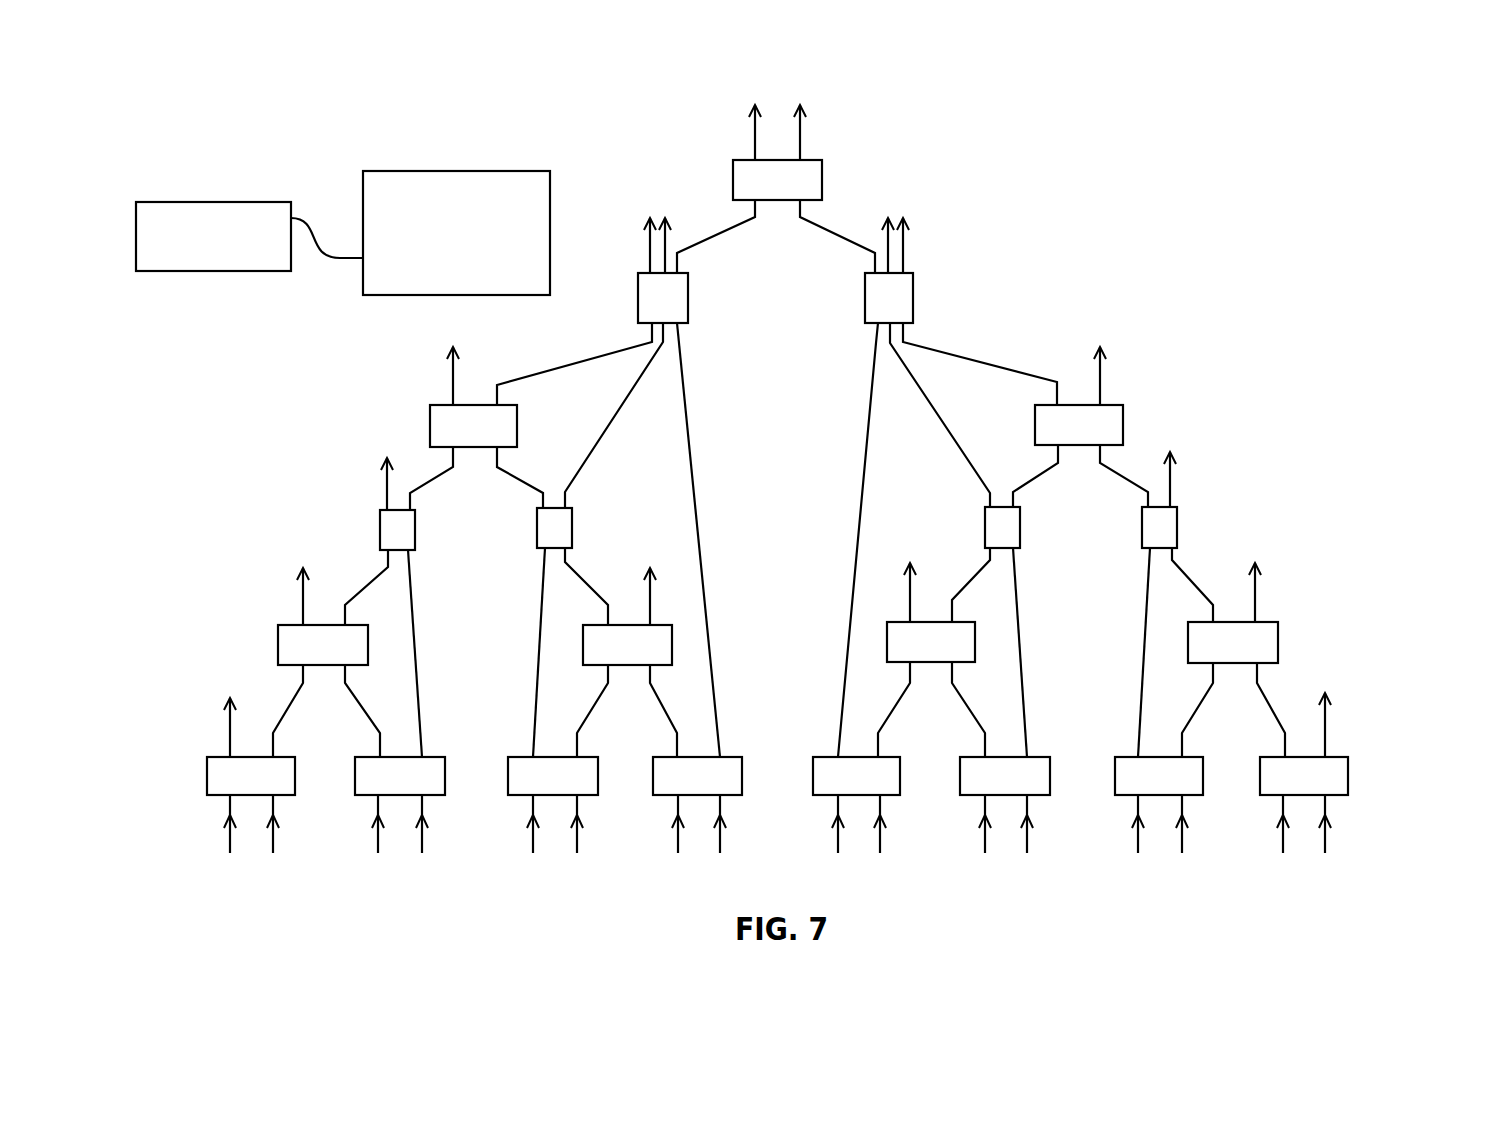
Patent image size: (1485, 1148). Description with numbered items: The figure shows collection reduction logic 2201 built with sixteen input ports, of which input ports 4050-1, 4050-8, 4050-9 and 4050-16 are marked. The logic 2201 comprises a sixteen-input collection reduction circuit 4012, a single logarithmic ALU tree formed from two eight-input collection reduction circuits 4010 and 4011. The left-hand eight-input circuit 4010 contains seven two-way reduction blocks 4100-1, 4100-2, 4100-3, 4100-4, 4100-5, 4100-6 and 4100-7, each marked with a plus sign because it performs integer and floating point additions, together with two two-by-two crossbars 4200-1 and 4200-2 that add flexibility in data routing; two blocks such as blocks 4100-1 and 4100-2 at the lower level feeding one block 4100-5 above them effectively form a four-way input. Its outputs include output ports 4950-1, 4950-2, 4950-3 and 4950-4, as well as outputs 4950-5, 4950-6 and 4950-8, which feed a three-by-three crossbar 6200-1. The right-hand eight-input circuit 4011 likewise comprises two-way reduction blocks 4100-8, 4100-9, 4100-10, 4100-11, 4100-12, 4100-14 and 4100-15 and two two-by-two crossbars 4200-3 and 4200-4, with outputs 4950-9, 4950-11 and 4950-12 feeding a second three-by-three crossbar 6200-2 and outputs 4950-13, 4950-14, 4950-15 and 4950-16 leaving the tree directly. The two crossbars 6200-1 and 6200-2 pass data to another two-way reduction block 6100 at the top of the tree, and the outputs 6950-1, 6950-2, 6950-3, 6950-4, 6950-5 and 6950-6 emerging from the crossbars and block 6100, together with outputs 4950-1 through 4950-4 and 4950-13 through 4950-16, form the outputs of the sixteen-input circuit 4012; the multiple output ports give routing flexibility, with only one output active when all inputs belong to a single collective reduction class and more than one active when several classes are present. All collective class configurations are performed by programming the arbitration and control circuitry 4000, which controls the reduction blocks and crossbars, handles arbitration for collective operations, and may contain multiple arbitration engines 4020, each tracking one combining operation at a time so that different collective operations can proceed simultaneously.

The collection reduction logic 2201 is at (330, 183).
The arbitration and control circuitry 4000 is at (508, 168).
The arbitration engine 4020 is at (249, 236).
The eight-input collective reduction circuit 4010 is at (343, 363).
The eight-input collection reduction circuit 4011 is at (1280, 407).
The sixteen-input collection reduction circuit 4012 is at (1062, 182).
The two-way reduction block 6100 is at (825, 182).
The 3×3 crossbar 6200-1 is at (688, 300).
The 3×3 crossbar 6200-2 is at (913, 292).
The output 6950-1 is at (648, 252).
The output 6950-2 is at (667, 252).
The output 6950-3 is at (757, 132).
The output 6950-4 is at (803, 132).
The output 6950-5 is at (898, 227).
The output 6950-6 is at (907, 247).
The two-way reduction block 4100-1 is at (217, 753).
The two-way reduction block 4100-2 is at (423, 757).
The two-way reduction block 4100-3 is at (568, 773).
The two-way reduction block 4100-4 is at (730, 753).
The two-way reduction block 4100-5 is at (287, 637).
The two-way reduction block 4100-6 is at (625, 637).
The two-way reduction block 4100-7 is at (445, 423).
The two-way reduction block 4100-8 is at (835, 780).
The two-way reduction block 4100-9 is at (1028, 753).
The two-way reduction block 4100-10 is at (1185, 782).
The two-way reduction block 4100-11 is at (1348, 753).
The two-way reduction block 4100-12 is at (940, 627).
The two-way reduction block 4100-14 is at (1123, 423).
The two-way reduction block 4100-15 is at (1280, 640).
The 2×2 crossbar 4200-1 is at (380, 523).
The 2×2 crossbar 4200-2 is at (537, 530).
The 2×2 crossbar 4200-3 is at (1017, 530).
The 2×2 crossbar 4200-4 is at (1175, 522).
The output port 4950-1 is at (225, 708).
The output port 4950-2 is at (300, 578).
The output port 4950-3 is at (383, 467).
The output port 4950-4 is at (447, 362).
The output port 4950-5 is at (607, 358).
The output port 4950-6 is at (613, 430).
The output port 4950-8 is at (690, 437).
The output 4950-9 is at (860, 487).
The output 4950-11 is at (938, 422).
The output 4950-12 is at (1025, 325).
The output 4950-13 is at (1102, 375).
The output 4950-14 is at (1173, 488).
The output 4950-15 is at (1258, 590).
The output 4950-16 is at (1327, 718).
The input port 4050-1 is at (228, 832).
The input port 4050-8 is at (718, 835).
The input port 4050-9 is at (837, 842).
The input port 4050-16 is at (1328, 823).